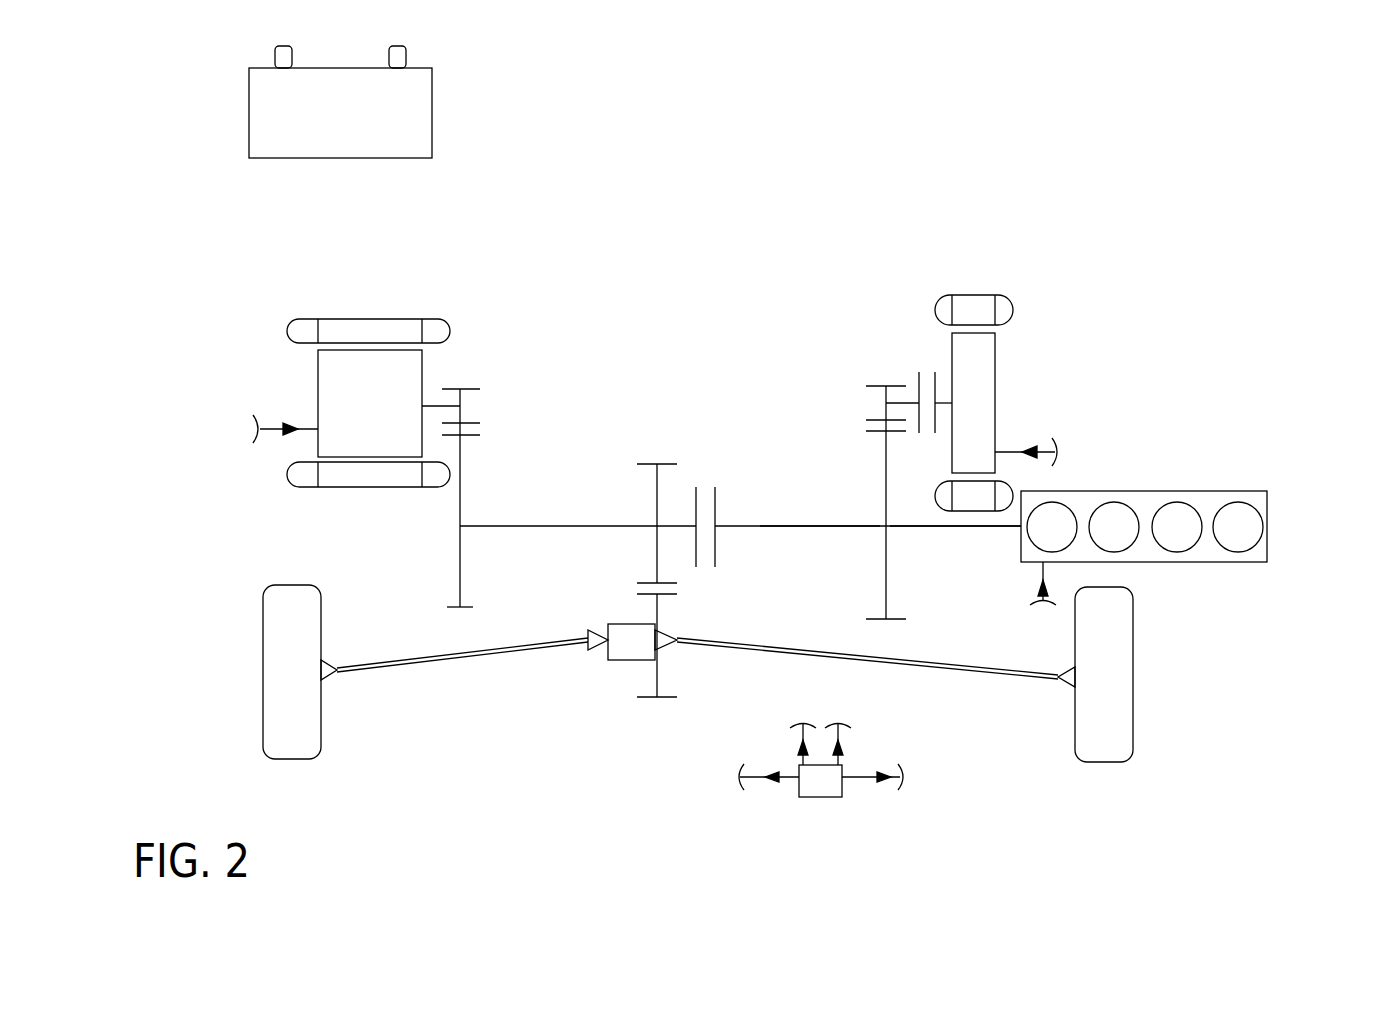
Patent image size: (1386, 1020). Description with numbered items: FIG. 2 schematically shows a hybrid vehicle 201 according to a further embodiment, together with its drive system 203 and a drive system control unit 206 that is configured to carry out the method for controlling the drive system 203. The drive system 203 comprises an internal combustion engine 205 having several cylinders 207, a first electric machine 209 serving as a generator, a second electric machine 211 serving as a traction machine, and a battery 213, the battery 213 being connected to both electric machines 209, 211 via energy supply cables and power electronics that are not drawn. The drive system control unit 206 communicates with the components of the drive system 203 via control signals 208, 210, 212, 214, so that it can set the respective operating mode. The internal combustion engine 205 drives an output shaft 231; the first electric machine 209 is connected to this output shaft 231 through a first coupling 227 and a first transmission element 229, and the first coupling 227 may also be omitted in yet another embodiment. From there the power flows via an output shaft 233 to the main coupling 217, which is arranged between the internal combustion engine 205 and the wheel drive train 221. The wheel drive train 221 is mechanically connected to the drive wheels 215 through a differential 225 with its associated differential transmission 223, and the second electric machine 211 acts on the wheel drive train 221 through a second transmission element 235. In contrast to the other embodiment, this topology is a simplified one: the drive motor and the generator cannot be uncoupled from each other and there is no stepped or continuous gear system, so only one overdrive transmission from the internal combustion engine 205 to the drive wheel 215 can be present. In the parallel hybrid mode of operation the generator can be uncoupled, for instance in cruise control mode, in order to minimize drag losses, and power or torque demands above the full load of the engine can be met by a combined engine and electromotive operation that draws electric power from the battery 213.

The hybrid vehicle 201 is at (1117, 193).
The drive system 203 is at (1232, 363).
The internal combustion engine 205 is at (1177, 539).
The drive system control unit 206 is at (808, 787).
The cylinder 207 is at (1244, 532).
The control signal 208 is at (1043, 574).
The first electric machine 209 is at (1015, 362).
The control signal 210 is at (1016, 452).
The second electric machine 211 is at (273, 381).
The control signal 212 is at (299, 429).
The battery 213 is at (430, 116).
The control signal 214 is at (893, 777).
The drive wheel 215 is at (263, 672).
The main coupling K0 217 is at (715, 500).
The wheel drive train 221 is at (657, 552).
The differential transmission 223 is at (665, 594).
The differential 225 is at (620, 661).
The first coupling K1 227 is at (919, 386).
The transmission element 229 is at (876, 420).
The output shaft of the internal combustion engine 231 is at (919, 526).
The output shaft 233 is at (830, 526).
The transmission element 235 is at (470, 423).